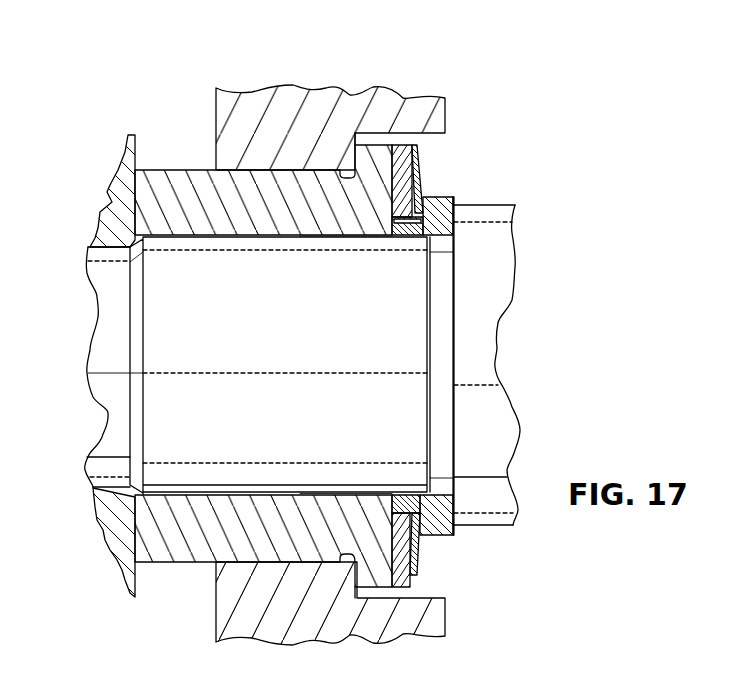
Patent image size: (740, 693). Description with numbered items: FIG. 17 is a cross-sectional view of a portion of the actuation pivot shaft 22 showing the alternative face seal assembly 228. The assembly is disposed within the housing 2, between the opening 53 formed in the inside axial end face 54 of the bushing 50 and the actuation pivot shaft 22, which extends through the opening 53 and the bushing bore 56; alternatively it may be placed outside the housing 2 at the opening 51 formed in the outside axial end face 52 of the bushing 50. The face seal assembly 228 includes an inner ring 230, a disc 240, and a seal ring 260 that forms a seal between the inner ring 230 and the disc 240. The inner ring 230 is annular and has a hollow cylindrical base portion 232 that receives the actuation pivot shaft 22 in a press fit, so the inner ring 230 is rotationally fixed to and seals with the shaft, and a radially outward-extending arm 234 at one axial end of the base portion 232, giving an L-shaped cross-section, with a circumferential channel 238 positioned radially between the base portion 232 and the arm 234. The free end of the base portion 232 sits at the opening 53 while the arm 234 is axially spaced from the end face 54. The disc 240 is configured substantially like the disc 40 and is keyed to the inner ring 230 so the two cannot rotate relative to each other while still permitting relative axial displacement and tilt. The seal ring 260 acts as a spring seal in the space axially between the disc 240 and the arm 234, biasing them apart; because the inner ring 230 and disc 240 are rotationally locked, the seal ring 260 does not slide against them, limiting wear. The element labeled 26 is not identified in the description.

The bearing housing 2 is at (297, 101).
The actuation pivot shaft 22 is at (358, 358).
The flange 26 is at (115, 203).
The disc 40 is at (358, 238).
The bushing 50 is at (185, 547).
The opening 51 is at (142, 480).
The outside axial end face 52 is at (123, 530).
The opening 53 is at (370, 493).
The inside axial end face 54 is at (410, 578).
The bushing bore 56 is at (332, 492).
The face seal assembly 228 is at (476, 294).
The inner ring 230 is at (436, 197).
The hollow cylindrical base portion 232 is at (447, 238).
The radially outward-extending flange or arm 234 is at (457, 207).
The circumferential channel 238 is at (398, 219).
The disc 240 is at (417, 170).
The seal ring 260 is at (424, 186).